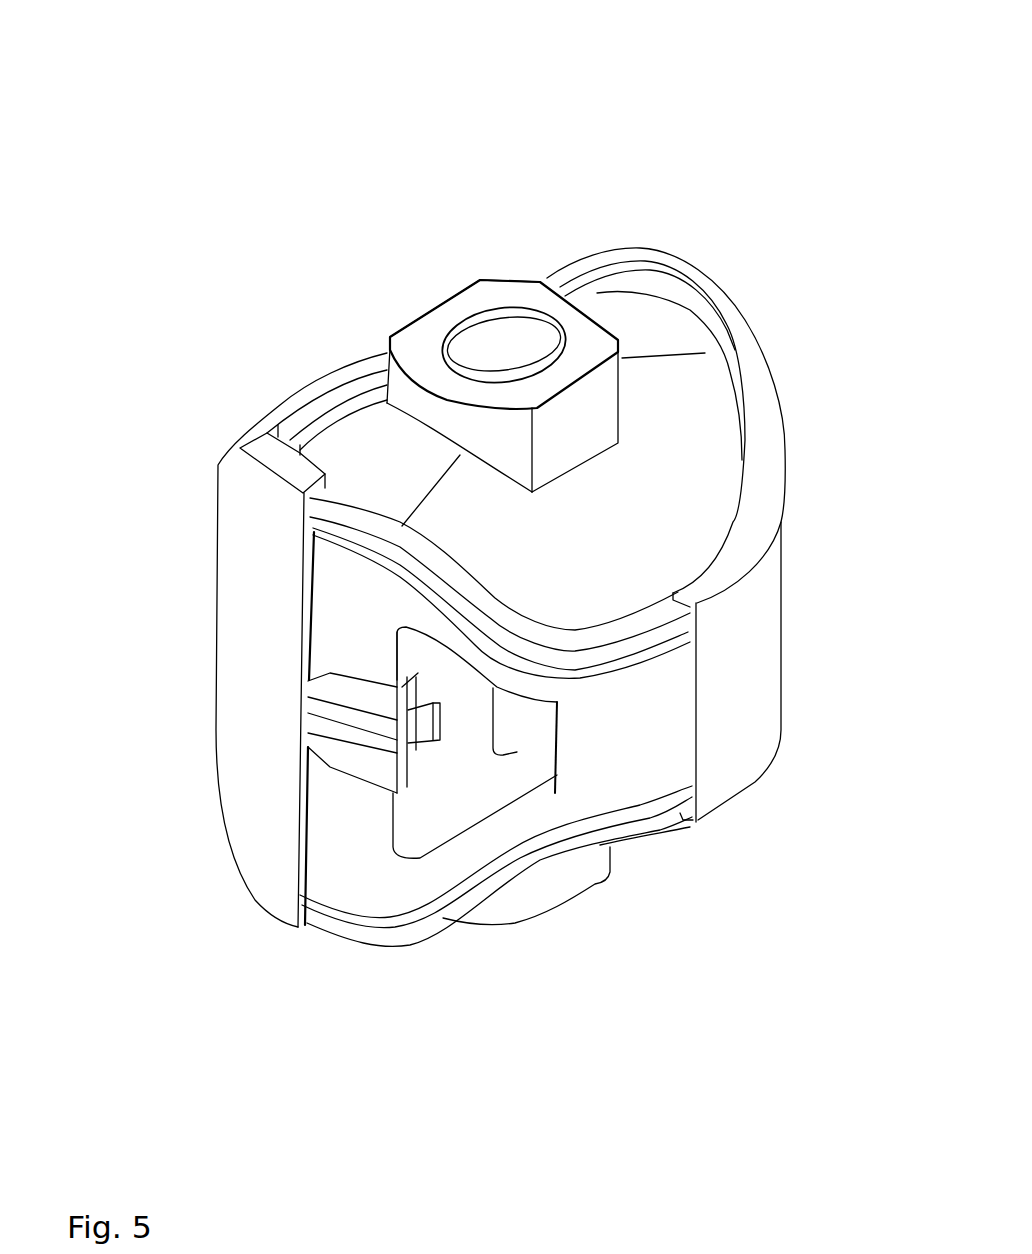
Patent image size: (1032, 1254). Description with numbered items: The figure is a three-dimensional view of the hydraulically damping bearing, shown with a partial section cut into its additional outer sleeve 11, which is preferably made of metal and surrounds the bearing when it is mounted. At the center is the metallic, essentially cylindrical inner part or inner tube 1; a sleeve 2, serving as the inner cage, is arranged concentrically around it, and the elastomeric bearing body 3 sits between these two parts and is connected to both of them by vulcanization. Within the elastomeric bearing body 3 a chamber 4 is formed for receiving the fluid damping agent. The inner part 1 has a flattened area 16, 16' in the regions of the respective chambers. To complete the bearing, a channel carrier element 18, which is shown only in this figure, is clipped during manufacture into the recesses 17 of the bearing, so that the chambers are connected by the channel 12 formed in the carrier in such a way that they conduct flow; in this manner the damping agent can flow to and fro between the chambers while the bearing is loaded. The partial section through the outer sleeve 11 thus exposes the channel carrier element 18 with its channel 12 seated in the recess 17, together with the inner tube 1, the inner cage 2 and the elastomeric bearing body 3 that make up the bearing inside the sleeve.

The inner part or inner tube 1 is at (525, 297).
The sleeve (inner cage) 2 is at (420, 546).
The elastomeric bearing body 3 is at (623, 470).
The chamber 4 is at (517, 727).
The outer sleeve 11 is at (732, 702).
The channel 12 is at (343, 722).
The flattened area 16 is at (630, 310).
The flattened area 16' is at (381, 249).
The recess 17 is at (420, 728).
The channel carrier element 18 is at (368, 768).